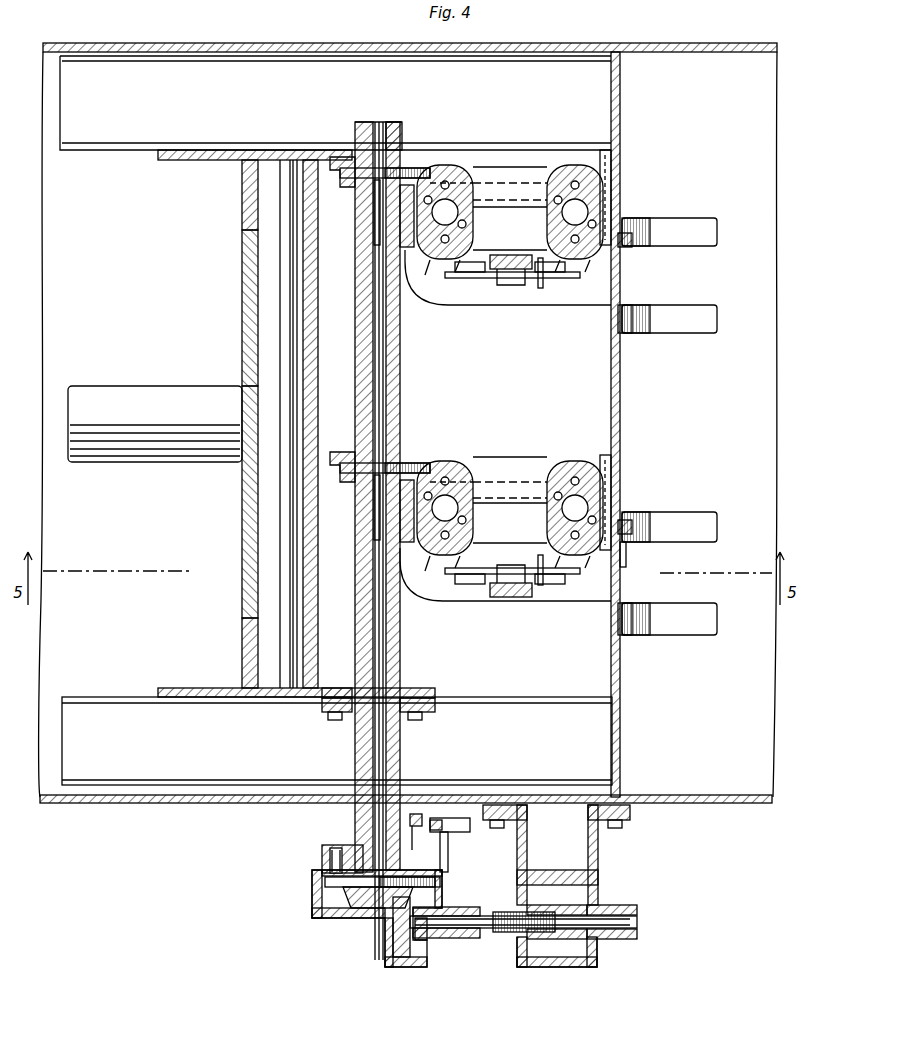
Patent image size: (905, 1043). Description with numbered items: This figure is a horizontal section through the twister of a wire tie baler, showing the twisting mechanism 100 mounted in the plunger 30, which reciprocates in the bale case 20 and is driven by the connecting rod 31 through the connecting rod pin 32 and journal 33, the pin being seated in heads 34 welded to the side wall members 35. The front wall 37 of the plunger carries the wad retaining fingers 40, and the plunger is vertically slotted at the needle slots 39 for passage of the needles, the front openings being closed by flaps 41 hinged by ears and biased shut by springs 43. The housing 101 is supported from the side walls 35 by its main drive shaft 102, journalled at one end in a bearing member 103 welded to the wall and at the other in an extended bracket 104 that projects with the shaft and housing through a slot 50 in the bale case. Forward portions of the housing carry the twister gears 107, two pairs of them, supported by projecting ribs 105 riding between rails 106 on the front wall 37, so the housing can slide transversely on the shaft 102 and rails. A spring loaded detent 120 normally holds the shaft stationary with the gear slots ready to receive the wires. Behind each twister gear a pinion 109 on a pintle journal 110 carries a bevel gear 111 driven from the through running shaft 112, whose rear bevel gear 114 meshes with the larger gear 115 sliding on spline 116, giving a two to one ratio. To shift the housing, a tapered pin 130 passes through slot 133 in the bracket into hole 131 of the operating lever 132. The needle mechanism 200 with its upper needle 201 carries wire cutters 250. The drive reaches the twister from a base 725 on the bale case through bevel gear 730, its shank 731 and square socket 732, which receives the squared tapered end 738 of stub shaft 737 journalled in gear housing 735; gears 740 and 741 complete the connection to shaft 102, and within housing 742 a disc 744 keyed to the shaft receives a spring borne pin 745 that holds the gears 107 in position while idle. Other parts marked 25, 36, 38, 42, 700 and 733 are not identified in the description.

The bale case 20 is at (735, 43).
The top plate 25 is at (228, 44).
The plunger 30 is at (640, 743).
The connecting rod 31 is at (110, 386).
The connecting rod pin 32 is at (270, 531).
The journal 33 is at (242, 318).
The heads 34 is at (242, 194).
The side wall members 35 is at (188, 162).
The lower beam 36 is at (337, 741).
The front wall of the plunger 37 is at (621, 366).
The chamber 38 is at (517, 495).
The needle slots 39 is at (456, 306).
The wad retaining fingers 40 is at (690, 246).
The flaps 41 is at (622, 296).
The nut 42 is at (640, 528).
The springs 43 is at (626, 553).
The slot in bale case 50 is at (150, 804).
The twisting mechanism 100 is at (481, 463).
The housing 101 is at (514, 165).
The main drive shaft 102 is at (386, 372).
The bearing member 103 is at (402, 128).
The extended bracket 104 is at (355, 748).
The projecting ribs 105 is at (606, 190).
The rails 106 is at (611, 165).
The twister gears 107 is at (438, 262).
The pinion 109 is at (470, 168).
The journal 110 is at (448, 170).
The bevel gears 111 is at (430, 183).
The through running shaft 112 is at (495, 482).
The bevel gear 114 is at (400, 230).
The gear 115 is at (355, 452).
The spline 116 is at (374, 213).
The spring loaded detent 120 is at (400, 405).
The pin 130 is at (414, 832).
The hole 131 is at (446, 826).
The operating lever 132 is at (424, 818).
The slot 133 is at (440, 857).
The needle mechanism 200 is at (532, 430).
The upper needle 201 is at (510, 285).
The wire cutters 250 is at (543, 280).
The drive shaft 700 is at (448, 928).
The base 725 is at (598, 852).
The bevel gear 730 is at (560, 940).
The shank 731 is at (540, 968).
The square socket 732 is at (597, 962).
The bearing bracket 733 is at (615, 905).
The gear housing 735 is at (464, 907).
The stub shaft 737 is at (440, 940).
The projecting end 738 is at (515, 932).
The gear 740 is at (390, 960).
The bevel gear 741 is at (343, 895).
The housing 742 is at (393, 940).
The disc 744 is at (325, 882).
The spring borne pin 745 is at (330, 870).